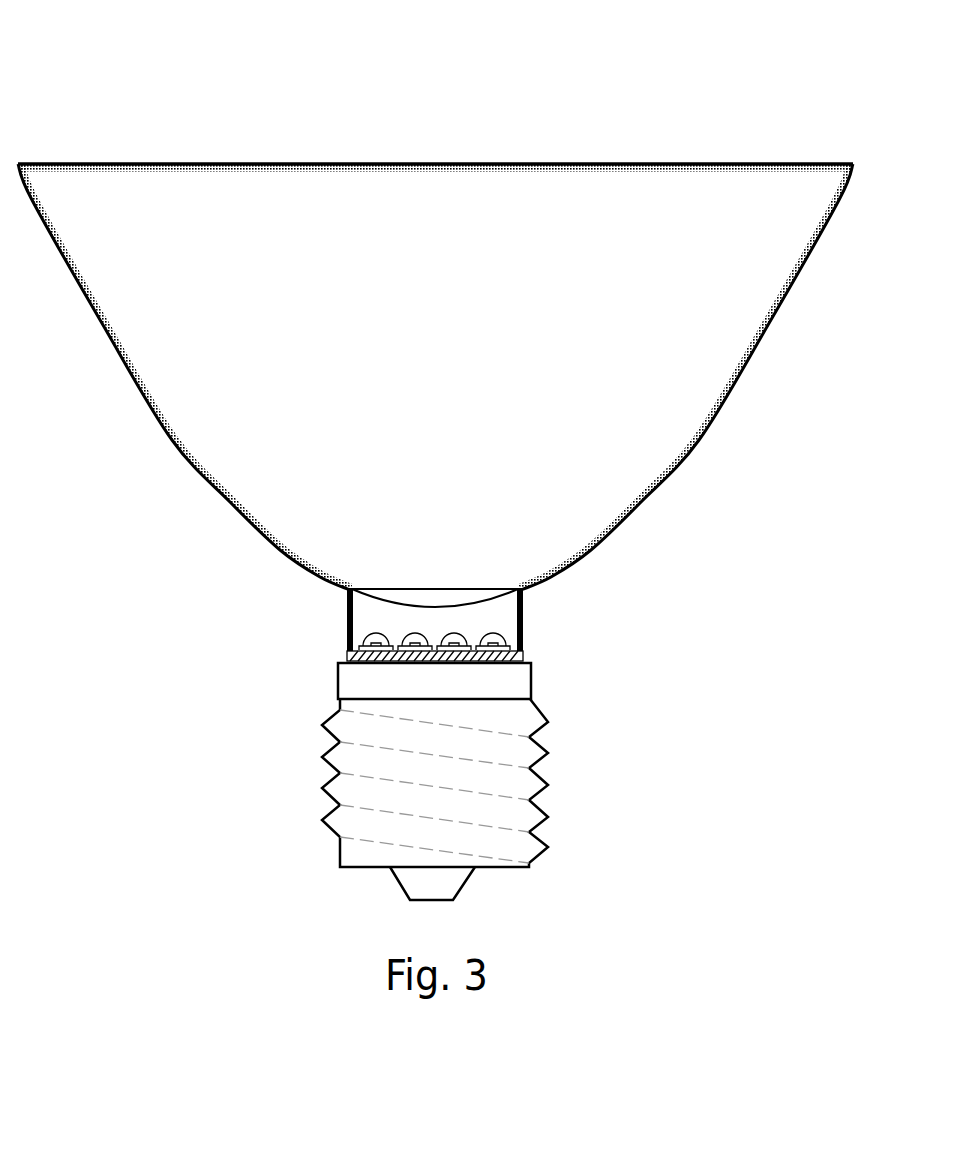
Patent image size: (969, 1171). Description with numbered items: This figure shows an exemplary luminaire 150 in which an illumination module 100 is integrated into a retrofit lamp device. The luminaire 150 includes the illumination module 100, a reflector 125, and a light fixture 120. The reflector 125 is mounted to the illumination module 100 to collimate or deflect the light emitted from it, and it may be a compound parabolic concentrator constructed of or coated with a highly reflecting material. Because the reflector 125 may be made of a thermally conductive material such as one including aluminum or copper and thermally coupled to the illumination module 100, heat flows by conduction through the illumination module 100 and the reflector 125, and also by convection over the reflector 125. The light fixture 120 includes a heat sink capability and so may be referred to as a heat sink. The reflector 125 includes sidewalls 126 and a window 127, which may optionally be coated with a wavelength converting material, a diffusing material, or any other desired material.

The illumination module 100 is at (349, 623).
The light fixture 120 is at (532, 681).
The reflector 125 is at (642, 502).
The sidewalls 126 is at (132, 363).
The window 127 is at (612, 175).
The luminaire 150 is at (106, 59).